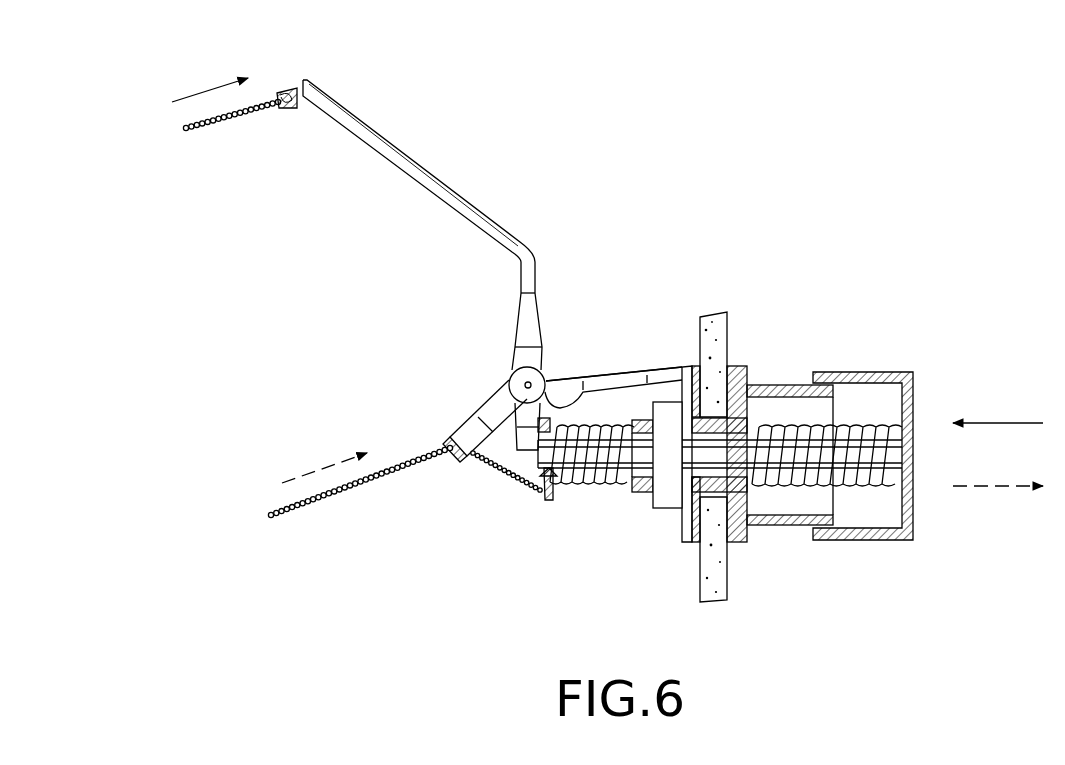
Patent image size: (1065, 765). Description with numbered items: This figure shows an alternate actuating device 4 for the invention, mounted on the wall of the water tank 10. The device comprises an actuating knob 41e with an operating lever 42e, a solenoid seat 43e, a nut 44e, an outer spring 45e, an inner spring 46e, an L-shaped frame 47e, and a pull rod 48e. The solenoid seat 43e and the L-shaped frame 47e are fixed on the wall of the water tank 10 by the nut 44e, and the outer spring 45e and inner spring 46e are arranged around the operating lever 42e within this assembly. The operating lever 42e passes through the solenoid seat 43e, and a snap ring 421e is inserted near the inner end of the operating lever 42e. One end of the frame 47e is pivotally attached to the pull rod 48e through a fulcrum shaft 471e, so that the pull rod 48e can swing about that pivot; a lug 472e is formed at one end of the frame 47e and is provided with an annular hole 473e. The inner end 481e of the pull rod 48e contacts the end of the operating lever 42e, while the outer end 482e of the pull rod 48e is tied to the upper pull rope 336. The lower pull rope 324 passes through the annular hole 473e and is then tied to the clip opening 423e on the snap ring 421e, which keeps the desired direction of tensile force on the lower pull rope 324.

The actuating device 4 is at (646, 228).
The water tank 10 is at (718, 601).
The lower pull rope 324 is at (370, 487).
The upper pull rope 336 is at (206, 131).
The actuating knob 41e is at (910, 541).
The operating lever 42e is at (813, 514).
The solenoid seat 43e is at (770, 524).
The nut 44e is at (665, 510).
The outer spring 45e is at (797, 433).
The inner spring 46e is at (592, 488).
The L-shaped frame 47e is at (641, 372).
The pull rod 48e is at (493, 221).
The snap ring 421e is at (530, 490).
The clip opening 423e is at (553, 502).
The fulcrum shaft 471e is at (511, 378).
The lever arm section 472e is at (463, 420).
The annular hole 473e is at (446, 442).
The inner end 481e is at (574, 406).
The outer end 482e is at (297, 88).